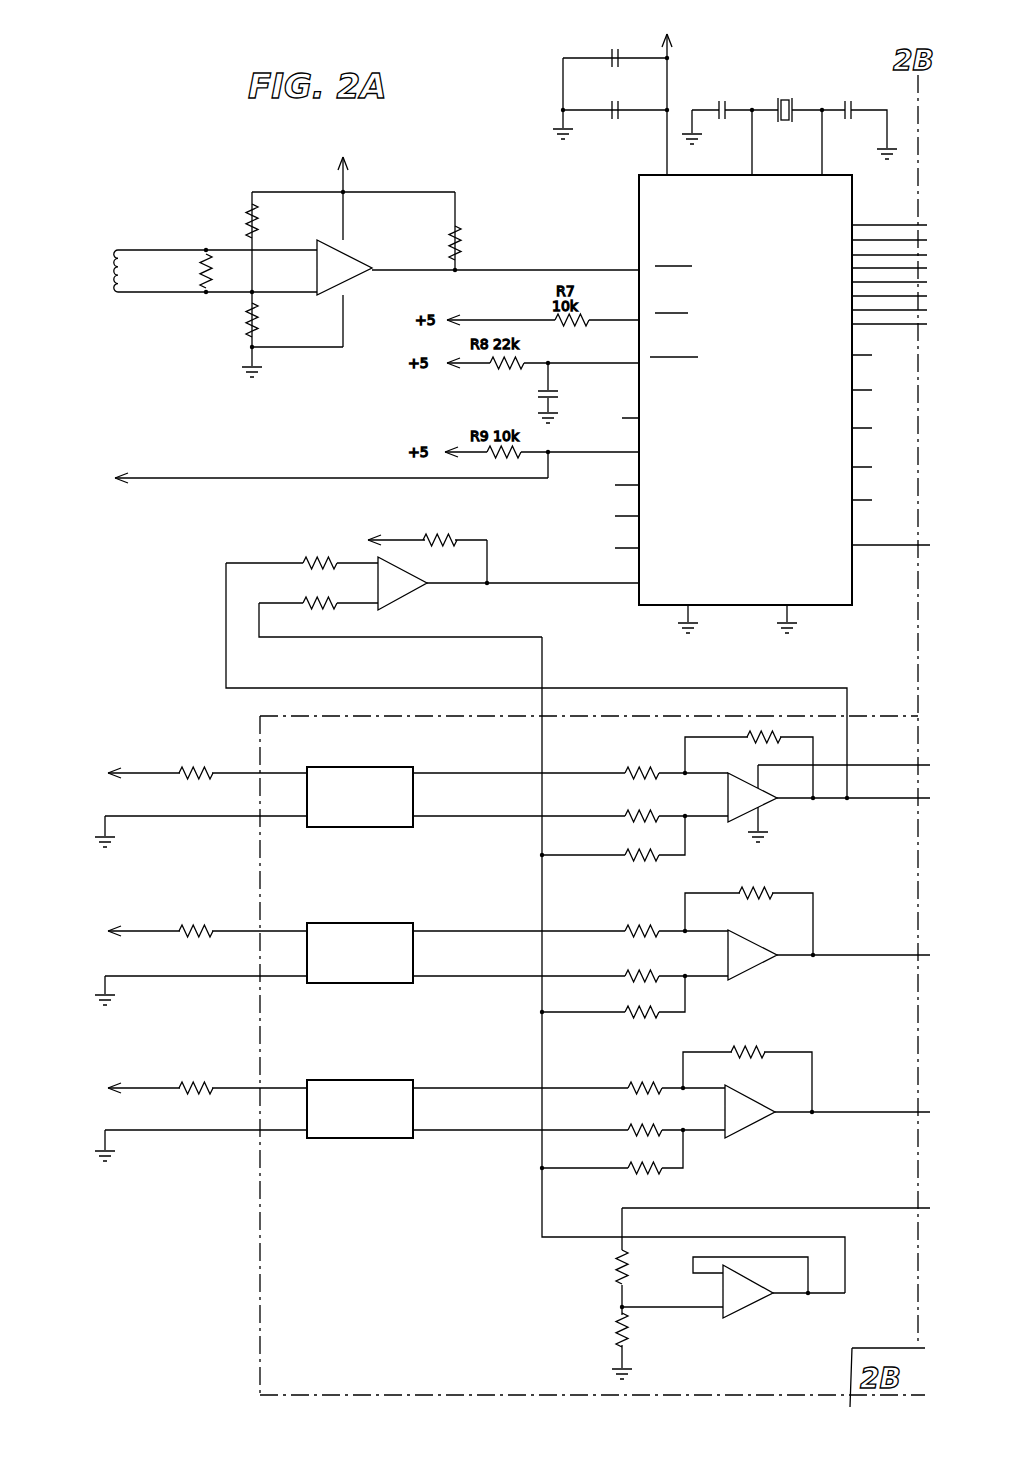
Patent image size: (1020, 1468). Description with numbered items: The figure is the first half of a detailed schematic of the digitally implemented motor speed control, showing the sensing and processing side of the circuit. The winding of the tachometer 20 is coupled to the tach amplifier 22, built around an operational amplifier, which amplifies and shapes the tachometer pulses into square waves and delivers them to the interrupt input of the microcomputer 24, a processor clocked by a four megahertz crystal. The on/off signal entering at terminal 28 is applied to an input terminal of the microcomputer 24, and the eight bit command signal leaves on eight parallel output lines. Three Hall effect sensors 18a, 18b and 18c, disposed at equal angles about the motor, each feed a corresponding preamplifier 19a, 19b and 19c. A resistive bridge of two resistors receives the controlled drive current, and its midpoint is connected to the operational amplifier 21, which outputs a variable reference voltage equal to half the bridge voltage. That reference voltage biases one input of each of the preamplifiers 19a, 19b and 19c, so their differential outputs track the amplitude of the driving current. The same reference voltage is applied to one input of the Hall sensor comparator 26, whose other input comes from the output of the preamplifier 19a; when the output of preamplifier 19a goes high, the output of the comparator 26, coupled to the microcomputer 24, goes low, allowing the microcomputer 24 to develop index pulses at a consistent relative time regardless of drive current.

The tachometer 20 is at (118, 250).
The tach amplifier 22 is at (397, 188).
The microcomputer 24 is at (852, 583).
The Hall sensor comparator 26 is at (408, 596).
The on/off control 28 is at (165, 476).
The Hall effect sensor 18a is at (363, 767).
The Hall effect sensor 18b is at (363, 923).
The Hall effect sensor 18c is at (360, 1080).
The preamplifier 19a is at (765, 806).
The preamplifier 19b is at (775, 930).
The preamplifier 19c is at (746, 1092).
The operational amplifier 21 is at (752, 1303).